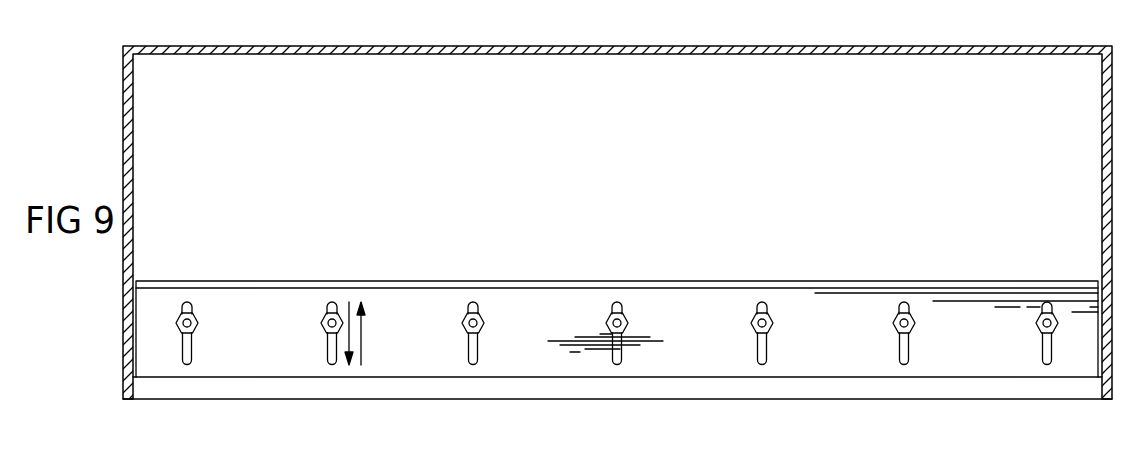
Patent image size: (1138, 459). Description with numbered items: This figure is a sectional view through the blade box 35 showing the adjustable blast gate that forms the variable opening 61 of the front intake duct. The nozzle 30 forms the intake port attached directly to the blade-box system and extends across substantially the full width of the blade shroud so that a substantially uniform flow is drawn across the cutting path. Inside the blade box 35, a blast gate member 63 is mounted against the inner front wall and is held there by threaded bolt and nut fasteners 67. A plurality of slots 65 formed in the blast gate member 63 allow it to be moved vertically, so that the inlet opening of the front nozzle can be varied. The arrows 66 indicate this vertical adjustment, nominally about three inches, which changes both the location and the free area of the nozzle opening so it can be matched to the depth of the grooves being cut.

The nozzle 30 is at (551, 378).
The blade box 35 is at (167, 46).
The variable opening 61 is at (262, 392).
The blast gate member 63 is at (256, 300).
The slot 65 is at (192, 352).
The arrows 66 is at (363, 333).
The threaded bolt and nut fastener 67 is at (474, 311).